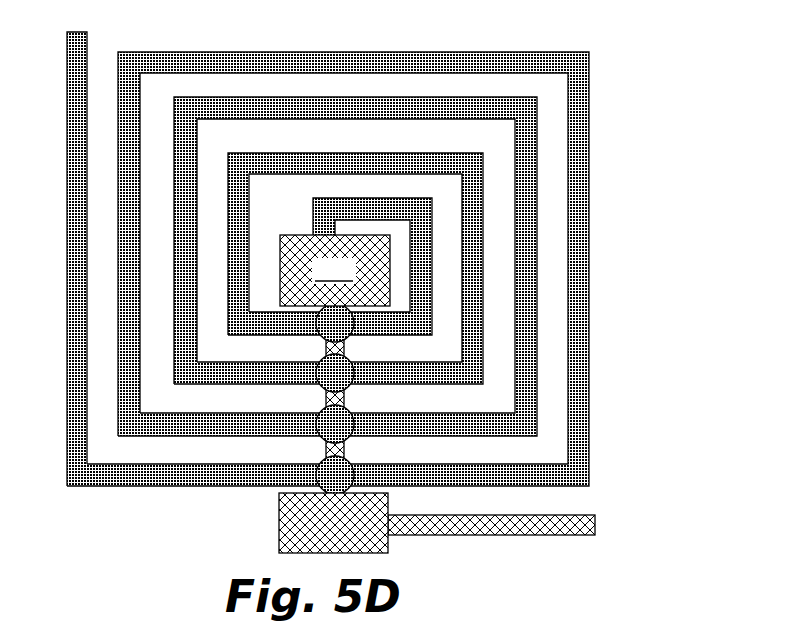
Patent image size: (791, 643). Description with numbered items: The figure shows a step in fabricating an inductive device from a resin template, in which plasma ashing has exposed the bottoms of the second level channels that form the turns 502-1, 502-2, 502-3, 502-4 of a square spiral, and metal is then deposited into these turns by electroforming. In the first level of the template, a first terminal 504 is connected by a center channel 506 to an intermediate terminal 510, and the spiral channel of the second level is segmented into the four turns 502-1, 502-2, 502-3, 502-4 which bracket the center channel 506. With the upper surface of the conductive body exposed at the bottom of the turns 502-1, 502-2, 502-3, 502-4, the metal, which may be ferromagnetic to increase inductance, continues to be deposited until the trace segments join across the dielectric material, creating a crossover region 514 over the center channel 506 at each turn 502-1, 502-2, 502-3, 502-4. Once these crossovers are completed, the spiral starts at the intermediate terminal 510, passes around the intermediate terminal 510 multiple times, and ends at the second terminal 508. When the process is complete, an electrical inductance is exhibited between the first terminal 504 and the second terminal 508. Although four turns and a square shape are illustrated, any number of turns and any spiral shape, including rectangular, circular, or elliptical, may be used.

The first turn 502-1 is at (575, 75).
The second turn 502-2 is at (525, 150).
The third turn 502-3 is at (467, 225).
The fourth turn 502-4 is at (427, 303).
The first terminal 504 is at (597, 518).
The center channel 506 is at (343, 400).
The second terminal 508 is at (88, 33).
The intermediate terminal 510 is at (335, 270).
The crossover region 514 is at (326, 428).